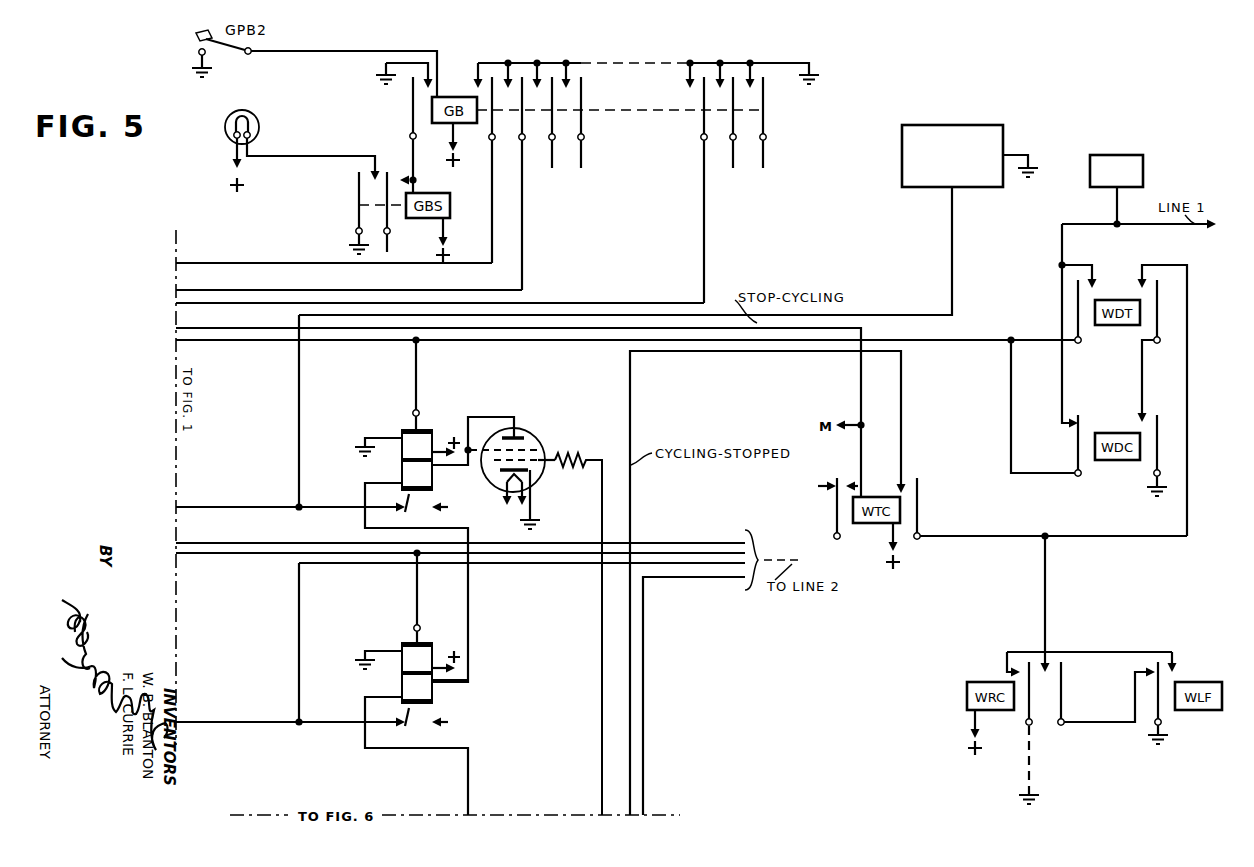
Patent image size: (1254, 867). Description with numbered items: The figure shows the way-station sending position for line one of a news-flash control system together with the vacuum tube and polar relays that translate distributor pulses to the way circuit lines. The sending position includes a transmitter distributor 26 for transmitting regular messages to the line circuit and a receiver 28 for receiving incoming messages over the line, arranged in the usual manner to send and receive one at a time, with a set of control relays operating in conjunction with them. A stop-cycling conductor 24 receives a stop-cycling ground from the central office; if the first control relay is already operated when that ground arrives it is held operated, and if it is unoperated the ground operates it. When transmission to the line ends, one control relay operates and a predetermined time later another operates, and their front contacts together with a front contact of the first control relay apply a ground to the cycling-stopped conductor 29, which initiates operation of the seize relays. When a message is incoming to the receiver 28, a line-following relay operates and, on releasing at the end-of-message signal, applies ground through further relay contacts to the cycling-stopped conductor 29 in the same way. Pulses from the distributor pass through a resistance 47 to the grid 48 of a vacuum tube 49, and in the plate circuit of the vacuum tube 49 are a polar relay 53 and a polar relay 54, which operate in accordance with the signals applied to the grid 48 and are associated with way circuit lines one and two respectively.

The stop-cycling conductor 24 is at (862, 332).
The transmitter distributor 26 is at (967, 125).
The receiver 28 is at (1117, 155).
The cycling-stopped conductor 29 is at (631, 410).
The resistance 47 is at (571, 453).
The grid 48 is at (534, 441).
The vacuum tube 49 is at (530, 480).
The polar relay 53 is at (424, 430).
The polar relay 54 is at (410, 643).